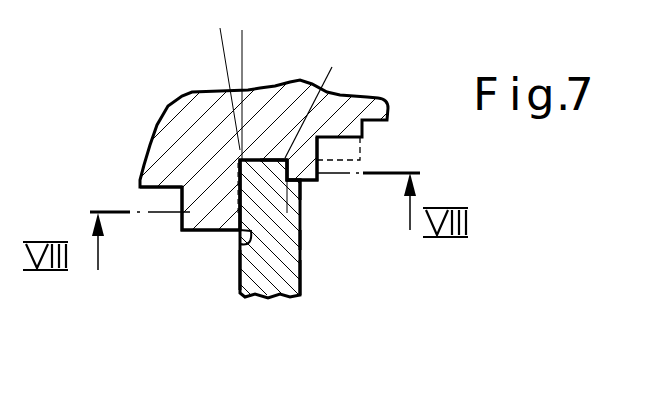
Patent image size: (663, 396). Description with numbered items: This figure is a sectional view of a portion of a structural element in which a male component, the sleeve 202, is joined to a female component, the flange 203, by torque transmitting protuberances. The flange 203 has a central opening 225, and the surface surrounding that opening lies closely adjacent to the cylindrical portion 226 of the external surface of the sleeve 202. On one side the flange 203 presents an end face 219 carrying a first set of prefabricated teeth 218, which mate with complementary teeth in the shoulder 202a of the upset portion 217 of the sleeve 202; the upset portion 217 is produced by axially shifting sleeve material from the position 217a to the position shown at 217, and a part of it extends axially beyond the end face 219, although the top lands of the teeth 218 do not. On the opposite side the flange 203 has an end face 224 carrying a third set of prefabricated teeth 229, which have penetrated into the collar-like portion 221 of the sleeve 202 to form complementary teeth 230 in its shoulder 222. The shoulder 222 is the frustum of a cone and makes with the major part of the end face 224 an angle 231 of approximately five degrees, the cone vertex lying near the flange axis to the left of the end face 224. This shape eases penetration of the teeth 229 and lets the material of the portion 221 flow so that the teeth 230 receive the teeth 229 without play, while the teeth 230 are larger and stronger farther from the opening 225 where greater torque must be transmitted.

The sleeve 202 is at (198, 127).
The shoulder of the upset portion 202a is at (301, 242).
The flange 203 is at (257, 283).
The upset portion 217 is at (320, 181).
The position of sleeve material before upsetting 217a is at (368, 147).
The first set of protuberances or teeth 218 is at (303, 193).
The end face of the flange 219 is at (310, 276).
The collar-like portion 221 is at (178, 206).
The shoulder of the collar-like portion 222 is at (223, 190).
The end face of the flange 224 is at (244, 270).
The central opening of the flange 225 is at (321, 96).
The cylindrical portion of the external surface of the sleeve 226 is at (280, 155).
The third set of protuberances or teeth 229 is at (241, 232).
The fourth set of protuberances or teeth 230 is at (236, 235).
The angle 231 is at (188, 49).